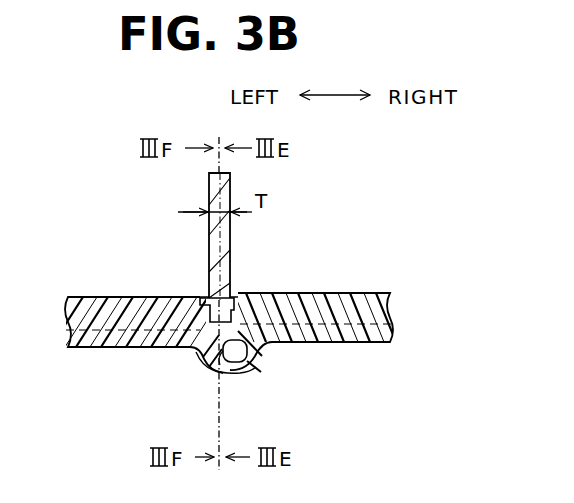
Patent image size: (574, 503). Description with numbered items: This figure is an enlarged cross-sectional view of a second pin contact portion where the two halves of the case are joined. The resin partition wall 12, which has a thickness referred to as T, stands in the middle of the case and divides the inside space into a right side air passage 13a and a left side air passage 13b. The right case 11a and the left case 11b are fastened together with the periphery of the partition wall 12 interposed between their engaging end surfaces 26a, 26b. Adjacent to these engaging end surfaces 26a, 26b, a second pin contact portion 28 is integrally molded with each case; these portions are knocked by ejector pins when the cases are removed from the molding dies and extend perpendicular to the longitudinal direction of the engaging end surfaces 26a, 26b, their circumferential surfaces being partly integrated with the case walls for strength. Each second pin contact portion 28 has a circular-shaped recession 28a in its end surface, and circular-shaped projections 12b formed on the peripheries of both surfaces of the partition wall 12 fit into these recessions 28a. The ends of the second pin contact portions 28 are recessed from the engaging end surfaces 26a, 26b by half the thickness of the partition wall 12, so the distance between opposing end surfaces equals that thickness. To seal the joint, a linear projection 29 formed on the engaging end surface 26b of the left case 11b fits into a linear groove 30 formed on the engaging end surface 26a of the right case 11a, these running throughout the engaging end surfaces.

The partition wall 12 is at (232, 233).
The right side air passage 13a is at (300, 236).
The left side air passage 13b is at (142, 238).
The circular-shaped projection 12b is at (172, 297).
The circular-shaped recession 28a is at (268, 294).
The second pin contact portion 28 is at (66, 313).
The linear projection 29 is at (226, 362).
The linear groove 30 is at (254, 346).
The engaging end surface 26a is at (218, 372).
The engaging end surface 26b is at (204, 361).
The right case 11a is at (383, 346).
The left case 11b is at (117, 350).